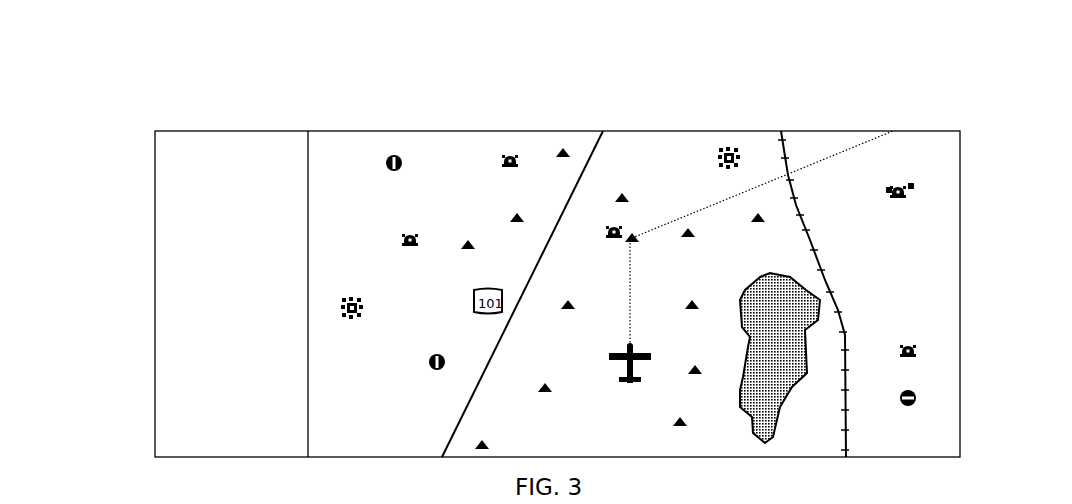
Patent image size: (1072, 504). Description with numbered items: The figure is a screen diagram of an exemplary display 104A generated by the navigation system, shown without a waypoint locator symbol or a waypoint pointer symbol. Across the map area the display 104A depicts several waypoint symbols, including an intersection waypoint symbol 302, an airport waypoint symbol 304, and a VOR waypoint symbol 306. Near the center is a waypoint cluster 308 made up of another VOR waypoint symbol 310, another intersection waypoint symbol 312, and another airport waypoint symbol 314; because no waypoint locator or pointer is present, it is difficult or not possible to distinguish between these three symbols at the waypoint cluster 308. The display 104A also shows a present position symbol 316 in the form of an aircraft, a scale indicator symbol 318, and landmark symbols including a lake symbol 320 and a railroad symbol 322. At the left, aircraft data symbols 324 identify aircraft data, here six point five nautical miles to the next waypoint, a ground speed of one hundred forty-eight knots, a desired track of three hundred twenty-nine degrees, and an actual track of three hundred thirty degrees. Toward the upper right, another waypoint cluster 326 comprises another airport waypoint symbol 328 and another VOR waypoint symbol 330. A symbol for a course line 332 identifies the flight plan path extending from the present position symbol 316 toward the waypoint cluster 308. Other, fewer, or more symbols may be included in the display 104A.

The display 104A is at (1003, 105).
The intersection waypoint symbol 302 is at (568, 149).
The airport waypoint symbol 304 is at (386, 158).
The VOR waypoint symbol 306 is at (910, 342).
The waypoint cluster 308 is at (648, 266).
The VOR waypoint symbol 310 is at (614, 226).
The intersection waypoint symbol 312 is at (619, 241).
The airport waypoint symbol 314 is at (636, 232).
The present position symbol 316 is at (626, 386).
The scale indicator symbol 318 is at (358, 414).
The lake symbol 320 is at (742, 406).
The railroad symbol 322 is at (830, 262).
The aircraft data symbols 324 is at (142, 226).
The waypoint cluster 326 is at (893, 215).
The airport waypoint symbol 328 is at (910, 183).
The VOR waypoint symbol 330 is at (888, 193).
The course line 332 is at (628, 334).